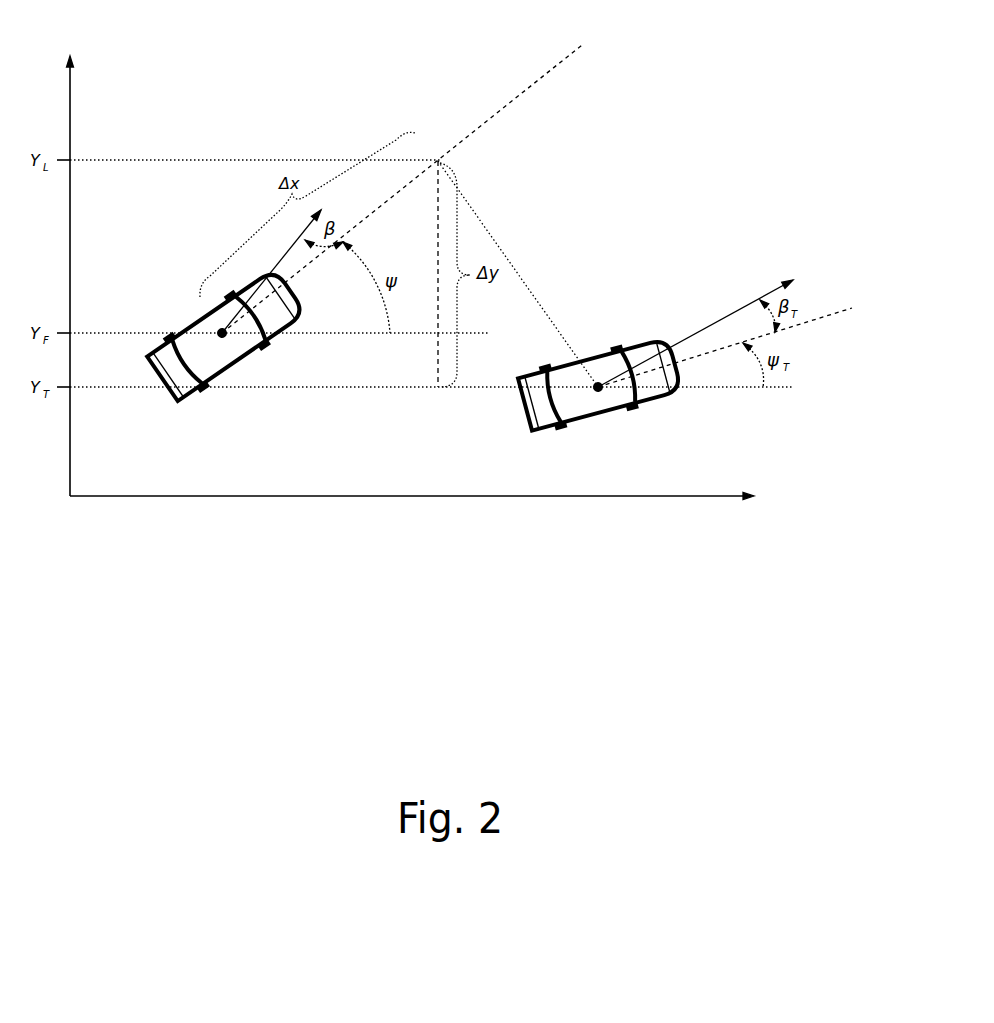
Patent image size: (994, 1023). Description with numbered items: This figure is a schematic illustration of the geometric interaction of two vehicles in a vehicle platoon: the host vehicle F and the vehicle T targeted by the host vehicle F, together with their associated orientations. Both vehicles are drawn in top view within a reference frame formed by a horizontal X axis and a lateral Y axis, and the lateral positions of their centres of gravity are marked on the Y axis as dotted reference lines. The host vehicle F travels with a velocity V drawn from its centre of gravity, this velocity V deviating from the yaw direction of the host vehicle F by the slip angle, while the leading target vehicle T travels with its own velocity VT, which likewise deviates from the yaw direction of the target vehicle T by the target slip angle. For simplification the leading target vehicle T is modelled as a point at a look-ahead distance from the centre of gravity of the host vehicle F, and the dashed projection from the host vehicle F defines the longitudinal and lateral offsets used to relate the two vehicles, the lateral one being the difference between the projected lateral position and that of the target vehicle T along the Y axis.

The host vehicle F is at (216, 336).
The target vehicle T is at (590, 389).
The velocity of host vehicle V is at (282, 261).
The velocity of target vehicle VT is at (704, 320).
The X axis X is at (424, 509).
The Y axis Y is at (81, 276).